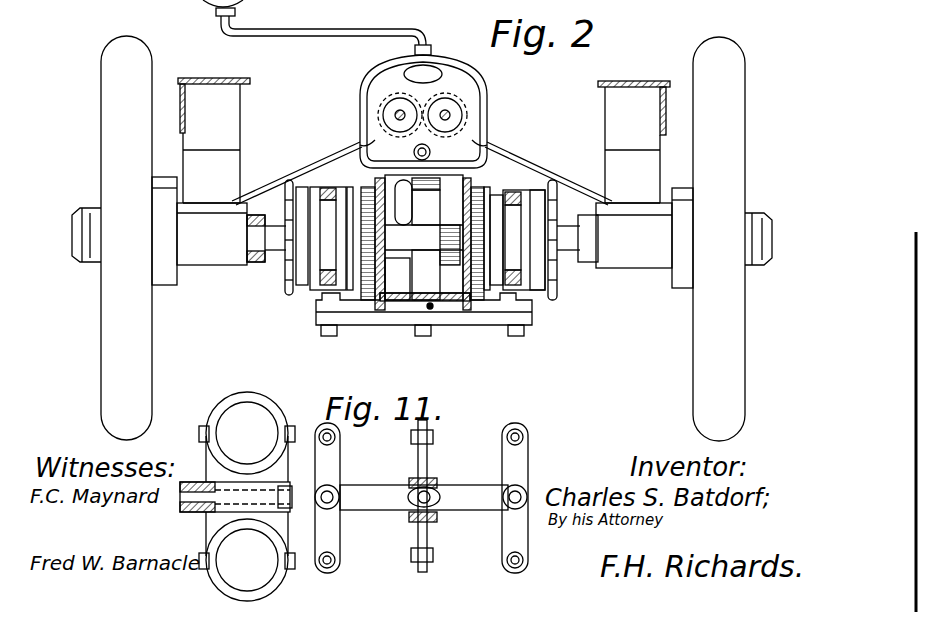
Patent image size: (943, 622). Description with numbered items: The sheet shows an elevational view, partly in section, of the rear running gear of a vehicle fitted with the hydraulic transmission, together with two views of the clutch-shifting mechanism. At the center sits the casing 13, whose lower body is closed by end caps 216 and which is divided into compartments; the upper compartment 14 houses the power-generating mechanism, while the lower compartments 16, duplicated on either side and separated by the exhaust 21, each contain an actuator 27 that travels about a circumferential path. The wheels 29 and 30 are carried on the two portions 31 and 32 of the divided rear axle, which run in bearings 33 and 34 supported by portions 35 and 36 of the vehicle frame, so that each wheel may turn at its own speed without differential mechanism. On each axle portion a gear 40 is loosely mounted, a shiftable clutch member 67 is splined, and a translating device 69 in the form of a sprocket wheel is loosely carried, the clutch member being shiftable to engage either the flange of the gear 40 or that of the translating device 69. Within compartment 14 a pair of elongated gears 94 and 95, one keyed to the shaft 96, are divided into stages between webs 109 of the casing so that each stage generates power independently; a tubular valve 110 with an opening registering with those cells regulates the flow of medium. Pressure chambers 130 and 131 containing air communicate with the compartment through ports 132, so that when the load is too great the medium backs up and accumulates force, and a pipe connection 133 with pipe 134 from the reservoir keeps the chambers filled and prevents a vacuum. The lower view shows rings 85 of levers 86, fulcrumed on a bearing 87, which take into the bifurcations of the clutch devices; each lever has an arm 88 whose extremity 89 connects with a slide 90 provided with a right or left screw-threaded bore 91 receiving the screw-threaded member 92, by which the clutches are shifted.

In FIG. 2, the casing 13 is at (376, 78).
In FIG. 2, the compartment 14 is at (423, 74).
In FIG. 2, the compartment 16 is at (424, 239).
In FIG. 2, the exhaust 21 is at (415, 310).
In FIG. 2, the actuator 27 is at (330, 215).
In FIG. 2, the wheel 29 is at (738, 105).
In FIG. 2, the wheel 30 is at (107, 62).
In FIG. 2, the axle portion 31 is at (560, 240).
In FIG. 2, the axle portion 32 is at (252, 240).
In FIG. 2, the bearing 33 is at (634, 235).
In FIG. 2, the bearing 34 is at (212, 234).
In FIG. 2, the frame portion 35 is at (618, 81).
In FIG. 2, the frame portion 36 is at (207, 78).
In FIG. 2, the gear 40 is at (368, 300).
In FIG. 2, the shiftable clutch member 67 is at (302, 205).
In FIG. 2, the translating device 69 is at (287, 200).
In FIG. 11, the ring 85 is at (245, 394).
In FIG. 11, the lever 86 is at (322, 425).
In FIG. 2, the bearing 87 is at (318, 305).
In FIG. 2, the arm 88 is at (375, 325).
In FIG. 11, the arm 88 is at (478, 494).
In FIG. 11, the extremity 89 is at (432, 512).
In FIG. 2, the slide 90 is at (432, 312).
In FIG. 11, the slide 90 is at (432, 482).
In FIG. 11, the screw-threaded bore 91 is at (410, 520).
In FIG. 11, the screw-threaded member 92 is at (414, 478).
In FIG. 2, the elongated gear 94 is at (393, 98).
In FIG. 2, the elongated gear 95 is at (465, 108).
In FIG. 2, the shaft 96 is at (452, 118).
In FIG. 2, the web 109 is at (448, 85).
In FIG. 2, the tubular valve 110 is at (345, 128).
In FIG. 2, the pressure chamber 130 is at (363, 87).
In FIG. 2, the pressure chamber 131 is at (482, 92).
In FIG. 2, the port 132 is at (363, 140).
In FIG. 2, the pipe connection 133 is at (433, 45).
In FIG. 2, the pipe 134 is at (322, 28).
In FIG. 2, the end cap 216 is at (360, 280).